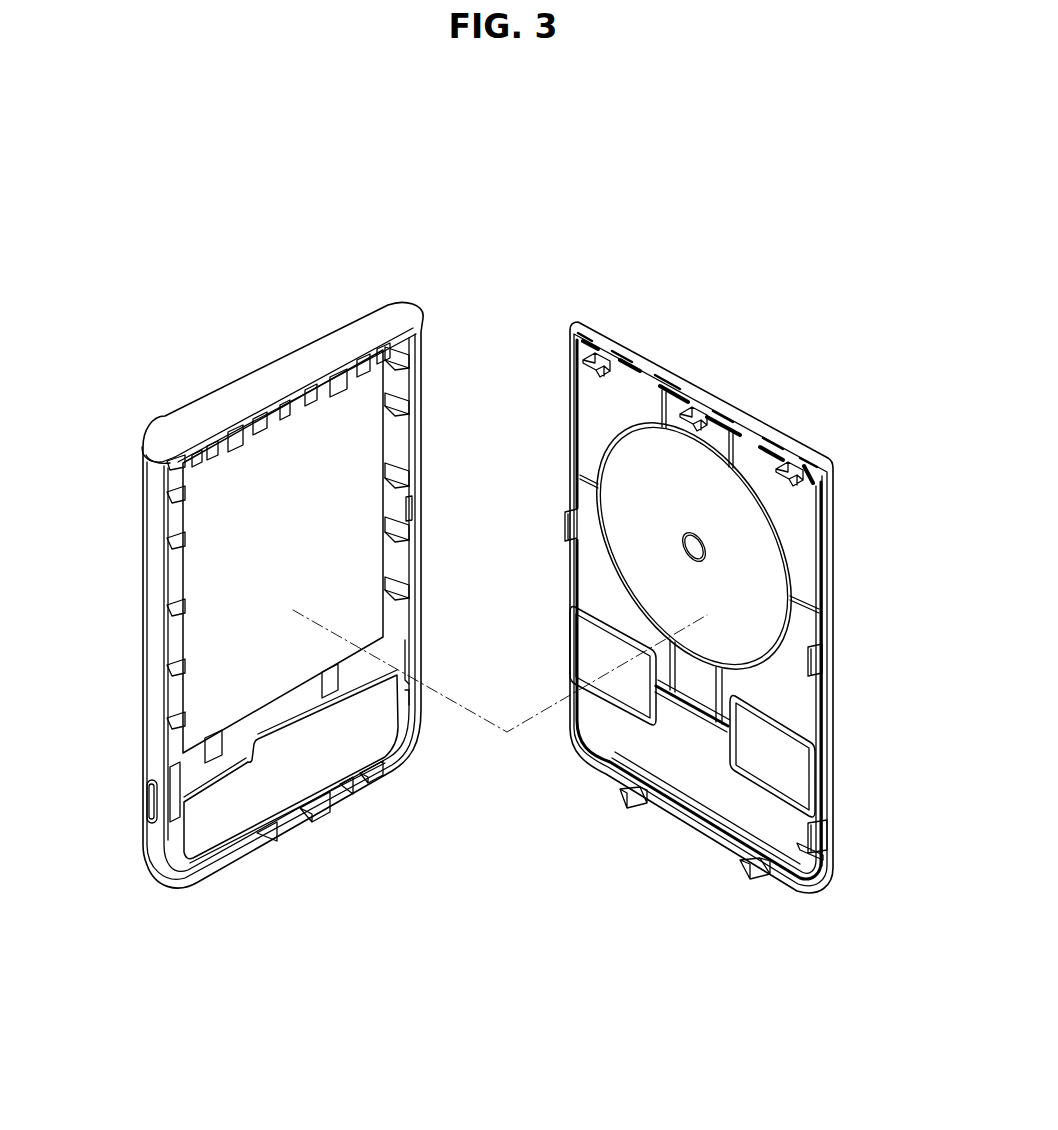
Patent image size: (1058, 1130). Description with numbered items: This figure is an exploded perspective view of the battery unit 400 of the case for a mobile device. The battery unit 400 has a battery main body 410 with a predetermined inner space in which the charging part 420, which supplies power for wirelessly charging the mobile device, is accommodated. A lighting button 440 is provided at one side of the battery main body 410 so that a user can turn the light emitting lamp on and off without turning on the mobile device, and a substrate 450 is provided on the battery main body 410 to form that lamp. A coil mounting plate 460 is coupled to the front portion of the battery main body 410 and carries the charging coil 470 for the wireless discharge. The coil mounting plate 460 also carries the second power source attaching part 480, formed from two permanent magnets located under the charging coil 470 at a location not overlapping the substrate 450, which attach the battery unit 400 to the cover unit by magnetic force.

The battery unit 400 is at (583, 233).
The battery main body 410 is at (373, 320).
The charging part 420 is at (343, 442).
The lighting button 440 is at (148, 802).
The substrate 450 is at (230, 818).
The coil mounting plate 460 is at (809, 512).
The charging coil 470 is at (752, 624).
The second power source attaching part 480 is at (633, 697).